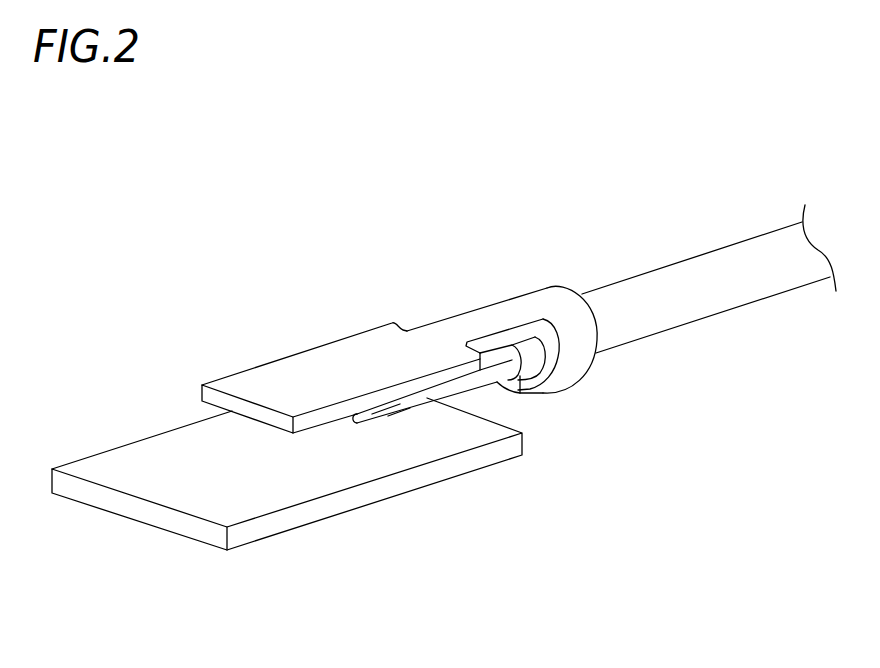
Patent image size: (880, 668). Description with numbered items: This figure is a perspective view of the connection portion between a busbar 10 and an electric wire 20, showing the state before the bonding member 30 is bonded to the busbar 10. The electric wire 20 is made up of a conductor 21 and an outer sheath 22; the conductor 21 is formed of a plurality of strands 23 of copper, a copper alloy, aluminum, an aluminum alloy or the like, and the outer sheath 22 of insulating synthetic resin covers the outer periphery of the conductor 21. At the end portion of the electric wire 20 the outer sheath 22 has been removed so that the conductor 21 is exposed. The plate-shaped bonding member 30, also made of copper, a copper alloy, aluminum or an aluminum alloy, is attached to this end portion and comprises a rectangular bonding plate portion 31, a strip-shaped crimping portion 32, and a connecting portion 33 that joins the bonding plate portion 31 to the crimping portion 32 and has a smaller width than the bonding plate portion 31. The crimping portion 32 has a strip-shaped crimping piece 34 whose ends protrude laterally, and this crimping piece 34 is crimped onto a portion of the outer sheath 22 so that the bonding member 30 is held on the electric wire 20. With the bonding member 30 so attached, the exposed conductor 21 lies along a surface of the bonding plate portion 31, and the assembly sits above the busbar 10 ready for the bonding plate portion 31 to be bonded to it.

The busbar 10 is at (235, 549).
The electric wire 20 is at (709, 299).
The conductor 21 is at (418, 405).
The outer sheath 22 is at (662, 323).
The strands 23 is at (386, 410).
The bonding member 30 is at (410, 346).
The bonding plate portion 31 is at (285, 370).
The crimping portion 32 is at (580, 328).
The connecting portion 33 is at (498, 313).
The crimping piece 34 is at (568, 372).